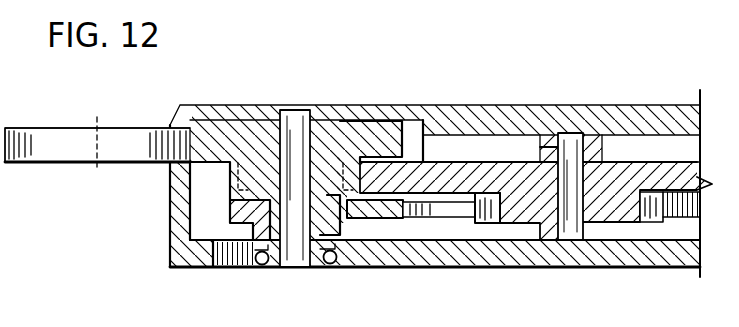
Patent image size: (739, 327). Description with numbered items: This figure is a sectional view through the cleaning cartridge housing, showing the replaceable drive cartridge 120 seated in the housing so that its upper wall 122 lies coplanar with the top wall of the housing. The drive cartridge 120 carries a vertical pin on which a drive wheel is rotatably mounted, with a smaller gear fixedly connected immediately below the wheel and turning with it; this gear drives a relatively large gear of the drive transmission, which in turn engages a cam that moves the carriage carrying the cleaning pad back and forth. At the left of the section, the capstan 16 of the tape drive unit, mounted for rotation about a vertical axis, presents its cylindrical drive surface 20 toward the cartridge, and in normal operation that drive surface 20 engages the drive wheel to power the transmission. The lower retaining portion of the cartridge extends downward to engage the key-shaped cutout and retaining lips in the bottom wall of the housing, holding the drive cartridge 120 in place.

The cylindrical drive surface 20 is at (57, 142).
The capstan 16 is at (143, 133).
The drive cartridge 120 is at (313, 100).
The upper wall 122 is at (328, 114).